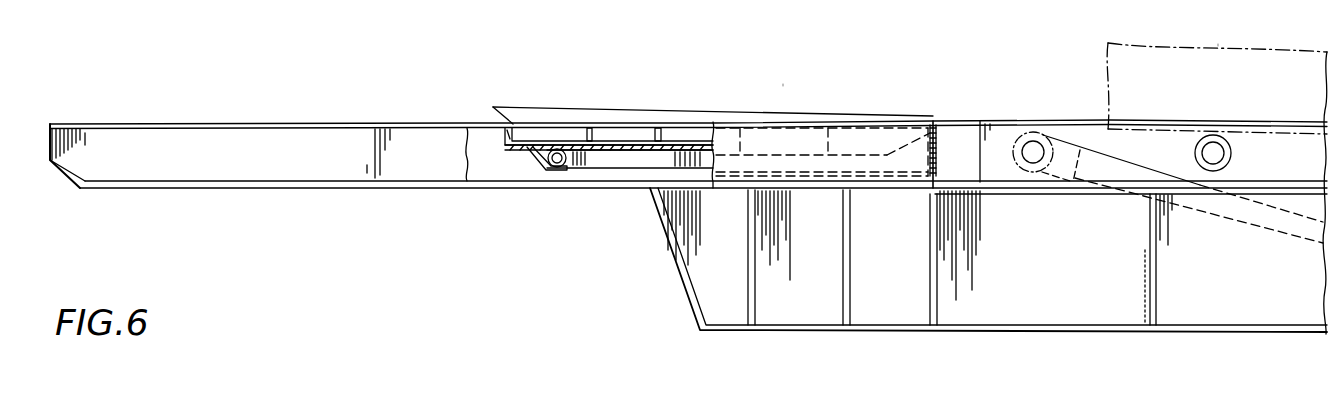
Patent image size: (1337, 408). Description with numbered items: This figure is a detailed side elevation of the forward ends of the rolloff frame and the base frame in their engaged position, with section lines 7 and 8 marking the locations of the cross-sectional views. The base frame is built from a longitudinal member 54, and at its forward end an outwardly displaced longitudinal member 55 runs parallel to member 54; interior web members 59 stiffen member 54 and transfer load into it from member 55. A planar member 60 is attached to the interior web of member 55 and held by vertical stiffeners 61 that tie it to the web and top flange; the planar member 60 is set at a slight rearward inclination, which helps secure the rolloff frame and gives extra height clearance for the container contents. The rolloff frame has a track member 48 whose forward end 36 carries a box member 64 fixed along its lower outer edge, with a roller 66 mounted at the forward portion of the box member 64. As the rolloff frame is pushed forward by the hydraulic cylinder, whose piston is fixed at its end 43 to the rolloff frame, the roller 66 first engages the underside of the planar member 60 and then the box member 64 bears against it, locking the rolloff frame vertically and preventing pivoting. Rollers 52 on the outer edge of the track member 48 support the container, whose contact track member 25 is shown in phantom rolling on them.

The section line 7- 7 is at (802, 229).
The section line 8- 8 is at (1238, 210).
The contact track member 25 is at (1172, 100).
The forward end of rolloff frame 36 is at (887, 116).
The piston end 43 is at (1054, 134).
The track member 48 is at (957, 143).
The roller 52 is at (1231, 154).
The longitudinal member 54 is at (1017, 295).
The outwardly displaced longitudinal member 55 is at (291, 163).
The interior web member 59 is at (932, 268).
The planar member 60 is at (635, 151).
The vertical stiffener 61 is at (657, 140).
The box member 64 is at (592, 160).
The roller 66 is at (540, 163).